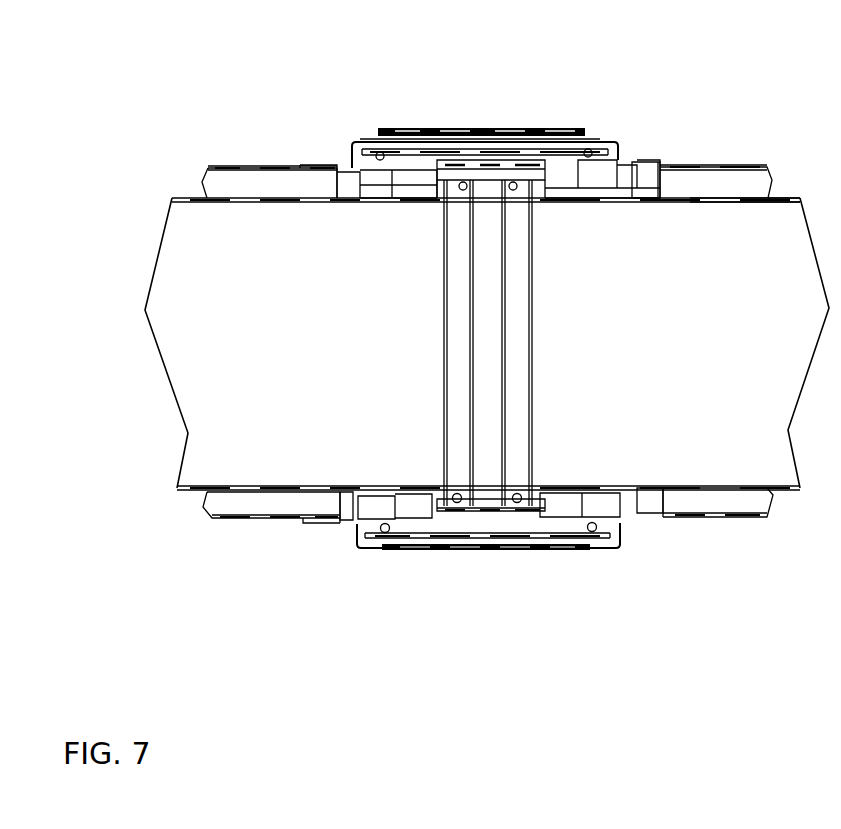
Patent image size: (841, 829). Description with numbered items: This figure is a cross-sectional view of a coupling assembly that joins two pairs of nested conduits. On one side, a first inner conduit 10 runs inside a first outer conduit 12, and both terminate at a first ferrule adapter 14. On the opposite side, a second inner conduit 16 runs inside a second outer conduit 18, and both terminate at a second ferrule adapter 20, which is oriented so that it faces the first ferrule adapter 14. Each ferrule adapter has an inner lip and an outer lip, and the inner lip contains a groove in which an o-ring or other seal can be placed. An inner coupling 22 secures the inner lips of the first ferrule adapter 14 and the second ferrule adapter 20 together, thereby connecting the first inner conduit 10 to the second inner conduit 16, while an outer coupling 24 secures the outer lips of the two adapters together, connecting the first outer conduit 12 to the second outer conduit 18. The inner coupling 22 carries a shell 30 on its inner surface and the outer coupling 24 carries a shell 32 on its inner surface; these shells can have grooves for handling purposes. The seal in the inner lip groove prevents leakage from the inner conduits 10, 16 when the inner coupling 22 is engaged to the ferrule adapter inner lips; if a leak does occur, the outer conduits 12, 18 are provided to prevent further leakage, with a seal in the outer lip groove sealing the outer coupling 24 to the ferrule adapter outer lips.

The first inner conduit 10 is at (183, 196).
The first outer conduit 12 is at (222, 166).
The first ferrule adapter 14 is at (306, 162).
The second inner conduit 16 is at (790, 192).
The second outer conduit 18 is at (742, 162).
The second ferrule adapter 20 is at (650, 158).
The inner coupling 22 is at (553, 542).
The outer coupling 24 is at (354, 548).
The shell 30 is at (537, 132).
The shell 32 is at (406, 128).